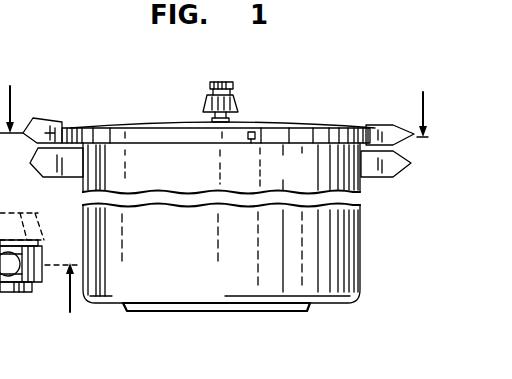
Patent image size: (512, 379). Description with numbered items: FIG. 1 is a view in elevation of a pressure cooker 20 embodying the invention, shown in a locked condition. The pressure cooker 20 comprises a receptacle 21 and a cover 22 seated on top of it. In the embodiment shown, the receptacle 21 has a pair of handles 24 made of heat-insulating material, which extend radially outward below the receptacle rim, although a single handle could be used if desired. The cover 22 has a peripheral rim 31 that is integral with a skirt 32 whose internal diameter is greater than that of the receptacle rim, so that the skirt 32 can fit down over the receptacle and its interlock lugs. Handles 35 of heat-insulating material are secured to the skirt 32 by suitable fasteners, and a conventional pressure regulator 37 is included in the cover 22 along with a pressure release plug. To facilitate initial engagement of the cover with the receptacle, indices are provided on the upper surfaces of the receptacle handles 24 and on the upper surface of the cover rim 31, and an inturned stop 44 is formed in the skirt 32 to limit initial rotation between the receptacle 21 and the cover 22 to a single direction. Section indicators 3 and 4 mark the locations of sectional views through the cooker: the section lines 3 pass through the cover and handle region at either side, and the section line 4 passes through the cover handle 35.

The section line 3- 3 is at (215, 97).
The section line 4- 4 is at (62, 301).
The pressure cooker 20 is at (308, 82).
The receptacle 21 is at (114, 314).
The cover 22 is at (130, 113).
The handles 24 is at (56, 177).
The peripheral rim 31 is at (293, 128).
The skirt 32 is at (304, 142).
The handles 35 is at (46, 256).
The pressure regulator 37 is at (230, 83).
The inturned stop 44 is at (248, 138).